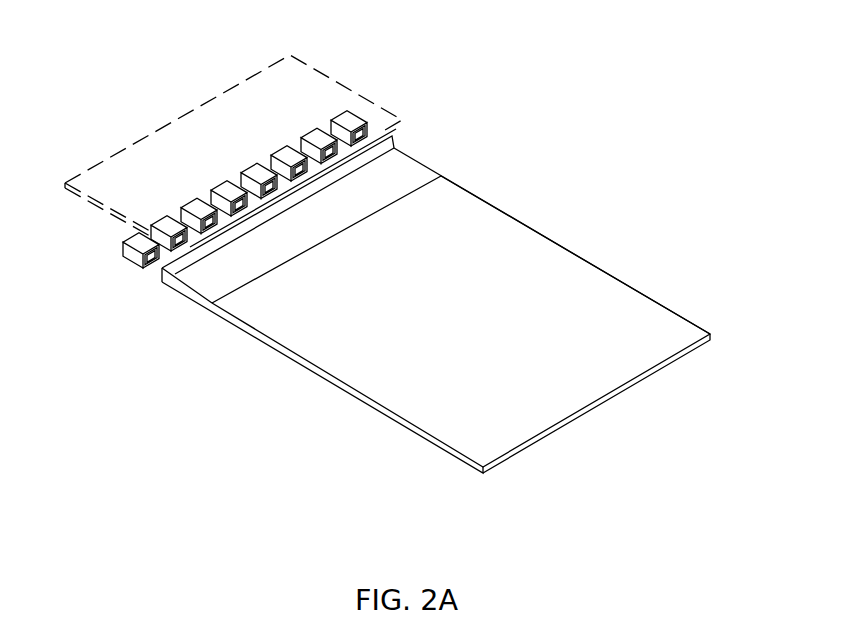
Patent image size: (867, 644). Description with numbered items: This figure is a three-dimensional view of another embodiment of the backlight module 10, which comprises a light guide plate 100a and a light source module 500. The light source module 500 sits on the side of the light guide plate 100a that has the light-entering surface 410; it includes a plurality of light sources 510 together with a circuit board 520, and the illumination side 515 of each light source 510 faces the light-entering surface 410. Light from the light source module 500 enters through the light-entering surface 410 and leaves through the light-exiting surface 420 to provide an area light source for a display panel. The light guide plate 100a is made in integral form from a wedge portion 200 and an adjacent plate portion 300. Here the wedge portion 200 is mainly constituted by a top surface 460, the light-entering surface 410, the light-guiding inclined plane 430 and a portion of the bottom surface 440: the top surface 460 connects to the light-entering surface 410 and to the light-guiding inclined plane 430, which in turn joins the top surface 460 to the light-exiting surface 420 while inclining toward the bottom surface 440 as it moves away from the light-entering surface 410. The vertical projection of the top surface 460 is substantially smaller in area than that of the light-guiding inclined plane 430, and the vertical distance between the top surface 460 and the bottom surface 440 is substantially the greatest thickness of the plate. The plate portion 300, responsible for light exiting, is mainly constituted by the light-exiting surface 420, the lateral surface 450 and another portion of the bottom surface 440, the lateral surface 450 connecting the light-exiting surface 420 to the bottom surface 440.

The backlight module 10 is at (109, 79).
The light guide plate 100a is at (588, 158).
The wedge portion 200 is at (418, 155).
The plate portion 300 is at (564, 244).
The light-entering surface 410 is at (160, 270).
The light-exiting surface 420 is at (639, 316).
The light-guiding inclined plane 430 is at (207, 284).
The bottom surface 440 is at (383, 412).
The lateral surface 450 is at (613, 394).
The top surface 460 is at (390, 150).
The light source module 500 is at (109, 257).
The light source 510 is at (134, 246).
The illumination side 515 is at (151, 267).
The circuit board 520 is at (340, 100).